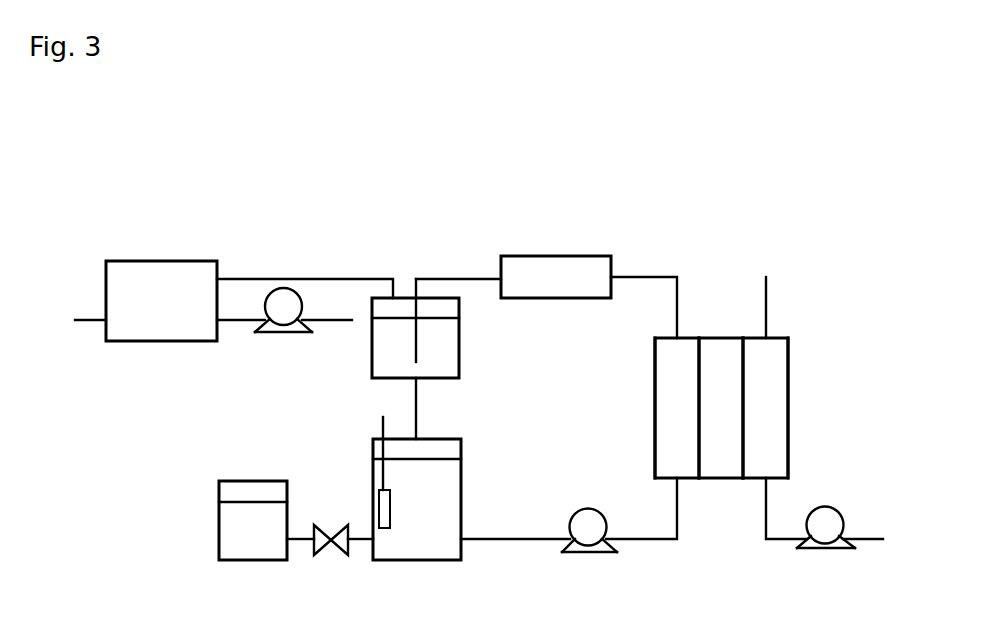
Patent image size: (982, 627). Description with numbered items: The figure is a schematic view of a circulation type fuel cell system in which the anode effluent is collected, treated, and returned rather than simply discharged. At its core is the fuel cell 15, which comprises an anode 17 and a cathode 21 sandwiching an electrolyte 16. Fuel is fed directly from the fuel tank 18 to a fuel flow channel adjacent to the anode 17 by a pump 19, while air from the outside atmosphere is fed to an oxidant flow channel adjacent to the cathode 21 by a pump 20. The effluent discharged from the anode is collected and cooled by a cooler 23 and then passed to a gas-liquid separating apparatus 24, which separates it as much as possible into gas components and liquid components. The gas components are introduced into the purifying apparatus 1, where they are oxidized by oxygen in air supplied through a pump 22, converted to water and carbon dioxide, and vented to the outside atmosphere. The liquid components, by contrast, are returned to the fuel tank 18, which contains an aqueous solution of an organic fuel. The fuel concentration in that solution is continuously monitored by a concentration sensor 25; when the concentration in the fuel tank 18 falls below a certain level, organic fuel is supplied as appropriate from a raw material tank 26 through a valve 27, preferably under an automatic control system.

The purifying apparatus 1 is at (148, 261).
The fuel cell 15 is at (797, 452).
The electrolyte 16 is at (716, 355).
The anode 17 is at (665, 405).
The fuel tank 18 is at (462, 478).
The pump 19 is at (588, 508).
The pump 20 is at (828, 507).
The cathode 21 is at (773, 389).
The pump 22 is at (286, 288).
The cooler 23 is at (537, 265).
The gas-liquid separating apparatus 24 is at (459, 347).
The concentration sensor 25 is at (390, 510).
The raw material tank 26 is at (288, 514).
The valve 27 is at (318, 549).